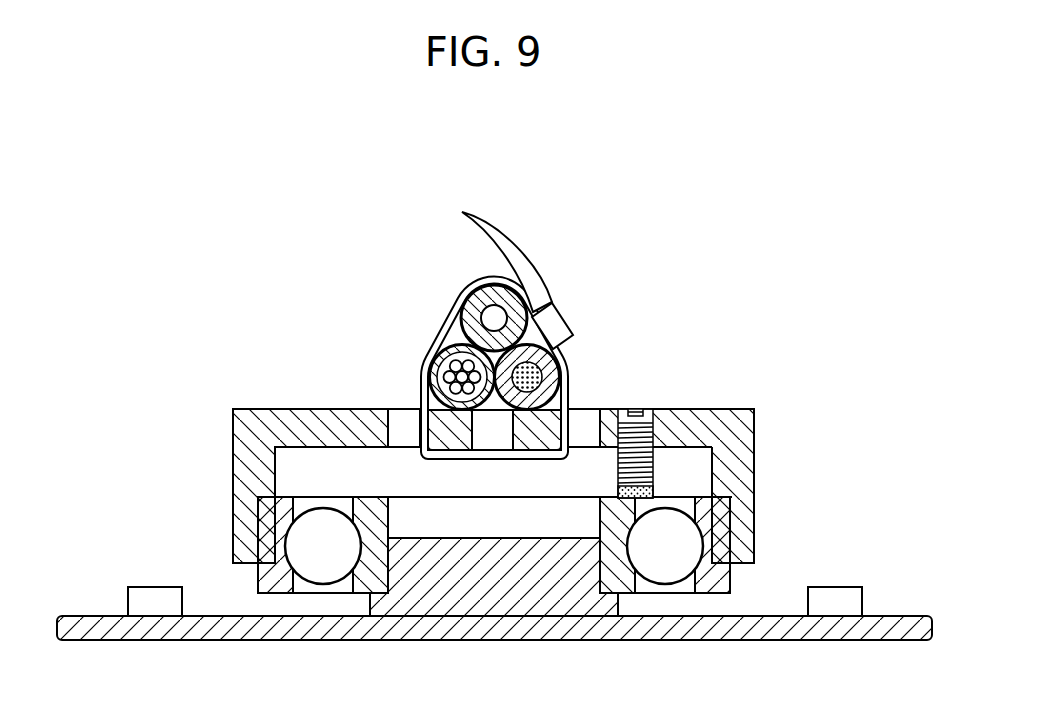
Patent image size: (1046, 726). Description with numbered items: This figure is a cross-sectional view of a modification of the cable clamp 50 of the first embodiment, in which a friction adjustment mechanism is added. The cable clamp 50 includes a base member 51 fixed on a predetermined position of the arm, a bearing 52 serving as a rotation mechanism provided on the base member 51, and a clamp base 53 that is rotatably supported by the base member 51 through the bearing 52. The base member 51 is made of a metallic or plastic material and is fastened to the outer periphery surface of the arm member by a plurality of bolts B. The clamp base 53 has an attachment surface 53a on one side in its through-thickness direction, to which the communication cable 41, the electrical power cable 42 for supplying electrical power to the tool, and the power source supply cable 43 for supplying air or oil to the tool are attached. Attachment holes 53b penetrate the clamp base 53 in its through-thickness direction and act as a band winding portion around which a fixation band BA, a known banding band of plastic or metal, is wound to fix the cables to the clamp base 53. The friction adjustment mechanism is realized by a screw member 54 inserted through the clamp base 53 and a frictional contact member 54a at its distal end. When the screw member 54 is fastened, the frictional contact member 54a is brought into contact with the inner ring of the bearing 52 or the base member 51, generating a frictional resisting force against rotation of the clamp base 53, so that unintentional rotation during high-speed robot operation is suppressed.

The cable clamp 50 is at (524, 458).
The base member 51 is at (103, 615).
The bearing 52 is at (735, 582).
The clamp base 53 is at (552, 506).
The attachment surface 53a is at (718, 408).
The attachment holes 53b is at (404, 409).
The screw member 54 is at (723, 426).
The frictional contact member 54a is at (657, 493).
The communication cable 41 is at (442, 356).
The electrical power cable 42 is at (572, 368).
The power source supply cable 43 is at (502, 302).
The fixation band BA is at (468, 306).
The bolts B is at (152, 587).